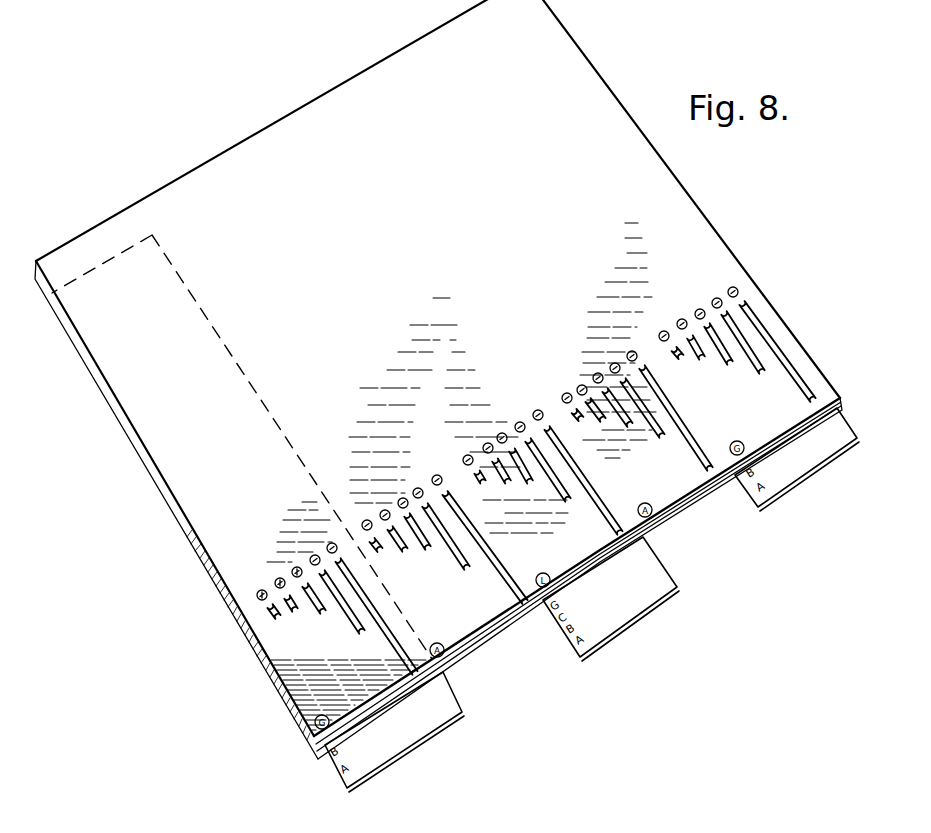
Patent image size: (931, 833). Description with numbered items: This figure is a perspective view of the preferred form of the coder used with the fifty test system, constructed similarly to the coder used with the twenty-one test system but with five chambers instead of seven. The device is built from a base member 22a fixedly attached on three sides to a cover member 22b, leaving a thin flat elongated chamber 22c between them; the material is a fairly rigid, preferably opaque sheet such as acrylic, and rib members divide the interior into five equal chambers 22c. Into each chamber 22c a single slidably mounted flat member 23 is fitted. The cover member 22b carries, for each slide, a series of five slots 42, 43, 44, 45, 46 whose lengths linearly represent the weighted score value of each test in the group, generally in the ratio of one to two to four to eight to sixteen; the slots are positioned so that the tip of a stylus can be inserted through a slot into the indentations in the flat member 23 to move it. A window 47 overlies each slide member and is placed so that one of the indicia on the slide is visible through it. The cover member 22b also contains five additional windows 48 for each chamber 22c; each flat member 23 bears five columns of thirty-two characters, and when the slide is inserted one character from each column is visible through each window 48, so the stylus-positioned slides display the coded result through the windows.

The base member 22a is at (488, 652).
The cover member 22b is at (688, 224).
The chamber 22c is at (688, 510).
The flat member 23 is at (806, 470).
The slot 42 is at (276, 612).
The slot 43 is at (291, 613).
The slot 44 is at (323, 611).
The slot 45 is at (361, 633).
The slot 46 is at (406, 668).
The window 47 is at (308, 728).
The additional window 48 is at (262, 589).